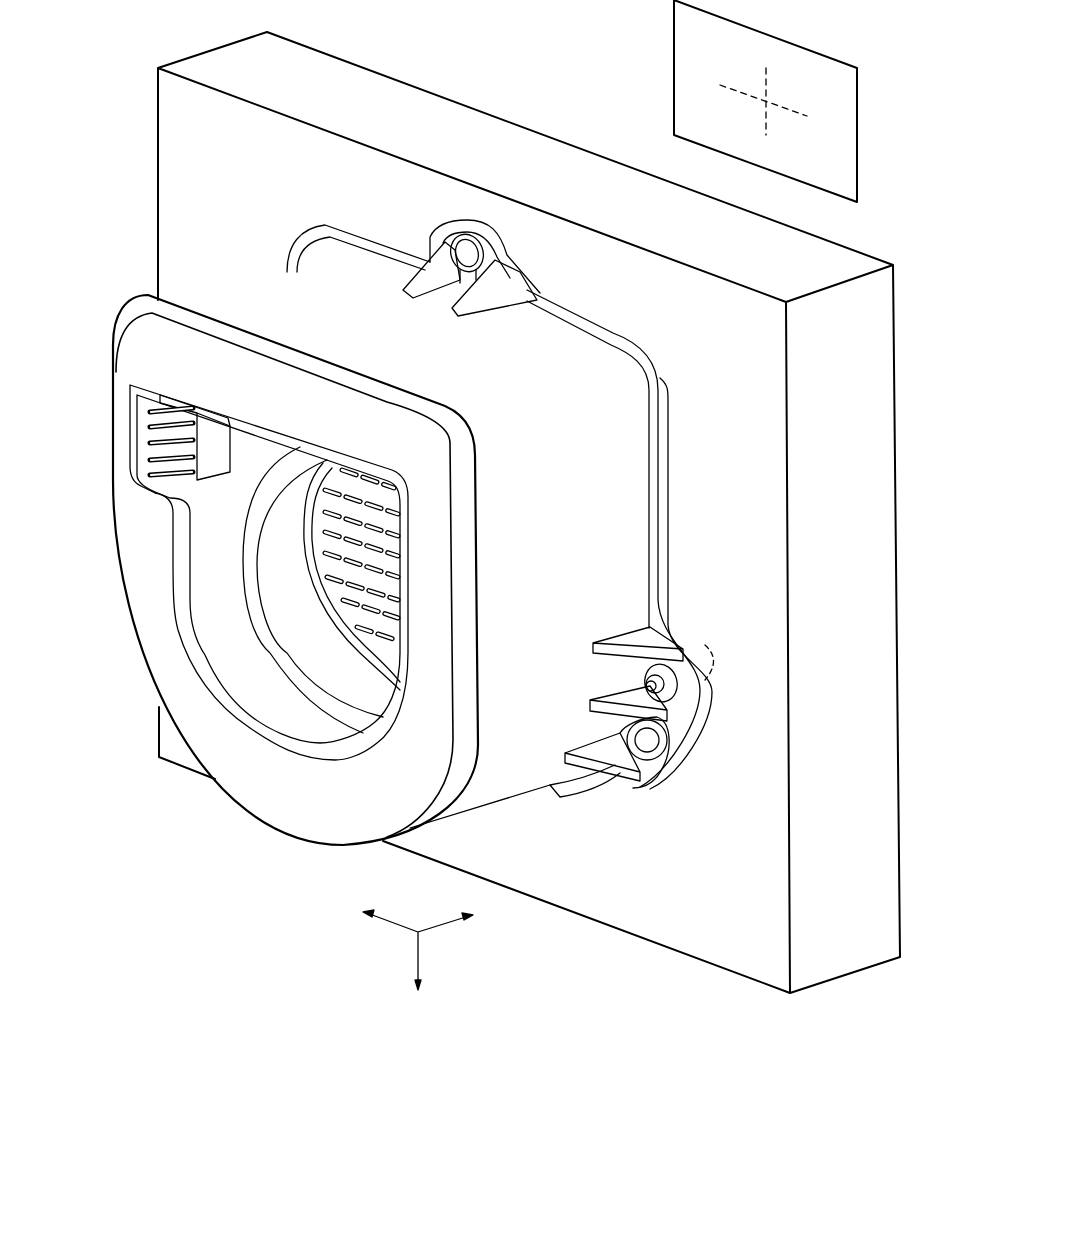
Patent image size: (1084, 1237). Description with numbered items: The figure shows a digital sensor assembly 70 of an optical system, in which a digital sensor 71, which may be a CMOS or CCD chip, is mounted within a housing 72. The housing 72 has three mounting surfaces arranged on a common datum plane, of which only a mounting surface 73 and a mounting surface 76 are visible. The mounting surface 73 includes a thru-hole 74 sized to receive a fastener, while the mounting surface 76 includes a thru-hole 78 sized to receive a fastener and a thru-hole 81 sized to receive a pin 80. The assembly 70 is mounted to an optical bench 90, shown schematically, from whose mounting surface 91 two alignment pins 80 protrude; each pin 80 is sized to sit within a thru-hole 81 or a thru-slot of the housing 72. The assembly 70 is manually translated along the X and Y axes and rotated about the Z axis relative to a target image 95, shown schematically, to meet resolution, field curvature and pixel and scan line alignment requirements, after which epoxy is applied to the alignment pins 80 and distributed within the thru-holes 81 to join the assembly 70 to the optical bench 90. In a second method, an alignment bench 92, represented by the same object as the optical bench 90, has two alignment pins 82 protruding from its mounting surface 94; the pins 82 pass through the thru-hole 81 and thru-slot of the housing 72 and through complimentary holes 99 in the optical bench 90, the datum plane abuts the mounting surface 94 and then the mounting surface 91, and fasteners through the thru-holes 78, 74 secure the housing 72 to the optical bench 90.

The digital sensor assembly 70 is at (439, 636).
The digital sensor 71 is at (321, 586).
The housing 72 is at (617, 385).
The mounting surface 73 is at (486, 231).
The thru-hole 74 is at (466, 238).
The mounting surface 76 is at (639, 724).
The thru-hole 78 is at (655, 780).
The alignment pin 80 is at (602, 673).
The alignment pin 82 is at (648, 685).
The thru-hole 81 is at (639, 682).
The complimentary hole 99 is at (705, 662).
The optical bench 90 is at (495, 512).
The alignment bench 92 is at (495, 512).
The mounting surface 91 is at (495, 512).
The mounting surface 94 is at (175, 185).
The target image 95 is at (670, 70).